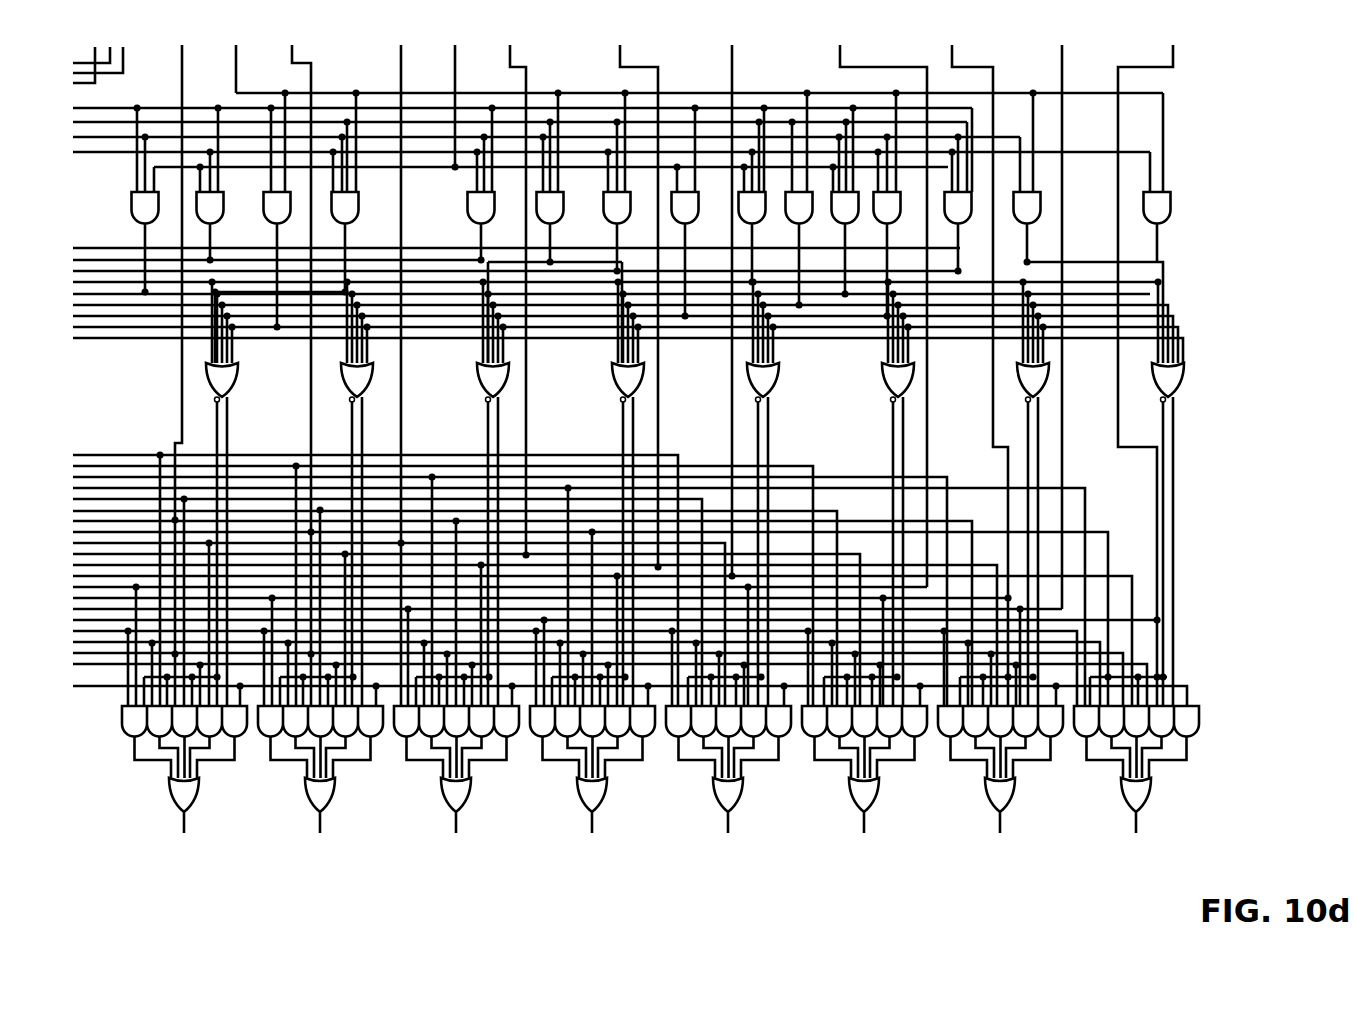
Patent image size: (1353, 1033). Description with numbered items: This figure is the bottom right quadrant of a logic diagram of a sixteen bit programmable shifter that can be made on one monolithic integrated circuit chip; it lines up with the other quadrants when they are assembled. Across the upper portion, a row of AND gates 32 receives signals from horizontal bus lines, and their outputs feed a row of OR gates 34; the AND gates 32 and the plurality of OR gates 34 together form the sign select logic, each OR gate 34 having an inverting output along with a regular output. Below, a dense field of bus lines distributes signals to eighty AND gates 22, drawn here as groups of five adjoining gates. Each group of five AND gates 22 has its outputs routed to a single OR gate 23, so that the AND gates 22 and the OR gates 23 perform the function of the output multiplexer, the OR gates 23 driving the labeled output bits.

The AND gates 32 is at (1171, 234).
The OR gates 34 is at (1189, 382).
The AND gates 22 is at (1056, 755).
The OR gates 23 is at (1048, 798).